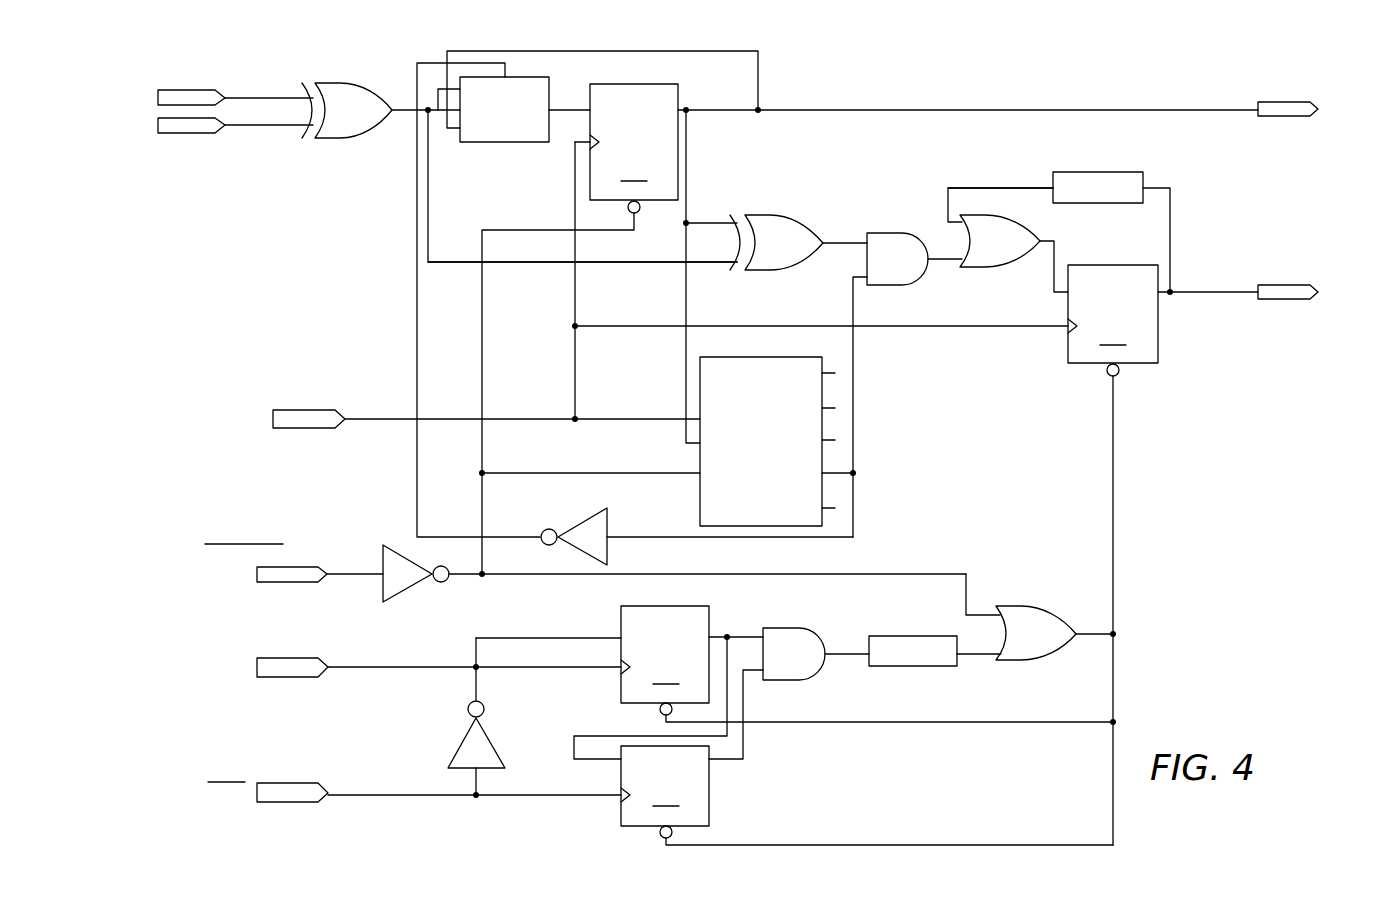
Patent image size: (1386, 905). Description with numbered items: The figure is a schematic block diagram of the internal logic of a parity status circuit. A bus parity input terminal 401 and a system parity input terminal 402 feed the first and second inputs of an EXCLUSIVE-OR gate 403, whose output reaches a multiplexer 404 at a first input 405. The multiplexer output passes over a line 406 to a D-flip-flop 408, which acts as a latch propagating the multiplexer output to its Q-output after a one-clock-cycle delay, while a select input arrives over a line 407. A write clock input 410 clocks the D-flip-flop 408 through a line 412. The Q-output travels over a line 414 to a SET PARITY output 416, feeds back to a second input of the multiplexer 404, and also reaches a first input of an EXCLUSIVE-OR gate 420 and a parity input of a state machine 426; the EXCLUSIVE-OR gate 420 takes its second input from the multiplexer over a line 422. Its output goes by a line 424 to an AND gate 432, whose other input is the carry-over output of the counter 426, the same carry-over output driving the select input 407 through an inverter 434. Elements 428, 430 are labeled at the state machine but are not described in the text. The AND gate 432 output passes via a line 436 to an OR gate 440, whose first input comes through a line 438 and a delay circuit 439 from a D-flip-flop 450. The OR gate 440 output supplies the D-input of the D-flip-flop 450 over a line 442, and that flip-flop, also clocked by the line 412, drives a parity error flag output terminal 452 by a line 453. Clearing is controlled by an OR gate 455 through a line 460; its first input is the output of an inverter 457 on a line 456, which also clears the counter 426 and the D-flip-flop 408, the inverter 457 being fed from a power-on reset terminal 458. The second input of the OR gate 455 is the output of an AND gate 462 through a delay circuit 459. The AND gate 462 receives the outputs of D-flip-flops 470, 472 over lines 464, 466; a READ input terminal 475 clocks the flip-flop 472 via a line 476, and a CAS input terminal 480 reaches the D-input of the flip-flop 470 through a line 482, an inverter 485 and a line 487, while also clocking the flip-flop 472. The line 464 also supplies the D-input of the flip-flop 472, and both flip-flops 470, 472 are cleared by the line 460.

The bus parity input terminal 401 is at (160, 108).
The system parity input terminal 402 is at (210, 135).
The EXCLUSIVE-OR gate 403 is at (362, 140).
The multiplexer 404 is at (487, 143).
The first input 405 is at (445, 72).
The line 406 is at (547, 78).
The line 407 is at (415, 62).
The D-flip-flop 408 is at (687, 108).
The write clock input 410 is at (294, 410).
The line 412 is at (577, 378).
The line 414 is at (822, 108).
The SET PARITY output 416 is at (1270, 117).
The EXCLUSIVE-OR gate 420 is at (768, 216).
The line 422 is at (715, 264).
The line 424 is at (850, 235).
The state machine 426 is at (700, 398).
The clear line 428 is at (545, 473).
The carry-out line 430 is at (840, 430).
The AND gate 432 is at (873, 286).
The inverter 434 is at (592, 512).
The line 436 is at (940, 255).
The line 438 is at (988, 190).
The delay circuit 439 is at (1085, 172).
The OR gate 440 is at (1015, 266).
The line 442 is at (1057, 250).
The D-flip-flop 450 is at (1160, 363).
The parity error flag output terminal 452 is at (1308, 283).
The line 453 is at (1237, 298).
The OR gate 455 is at (1008, 606).
The line 456 is at (872, 571).
The inverter 457 is at (402, 600).
The power-on reset terminal 458 is at (290, 567).
The delay circuit 459 is at (890, 668).
The line 460 is at (1117, 682).
The AND gate 462 is at (790, 628).
The line 464 is at (733, 630).
The line 466 is at (735, 763).
The D-flip-flop 470 is at (620, 698).
The D-flip-flop 472 is at (710, 795).
The READ input terminal 475 is at (270, 658).
The line 476 is at (460, 666).
The CAS input terminal 480 is at (272, 783).
The line 482 is at (500, 798).
The inverter 485 is at (460, 750).
The line 487 is at (472, 678).